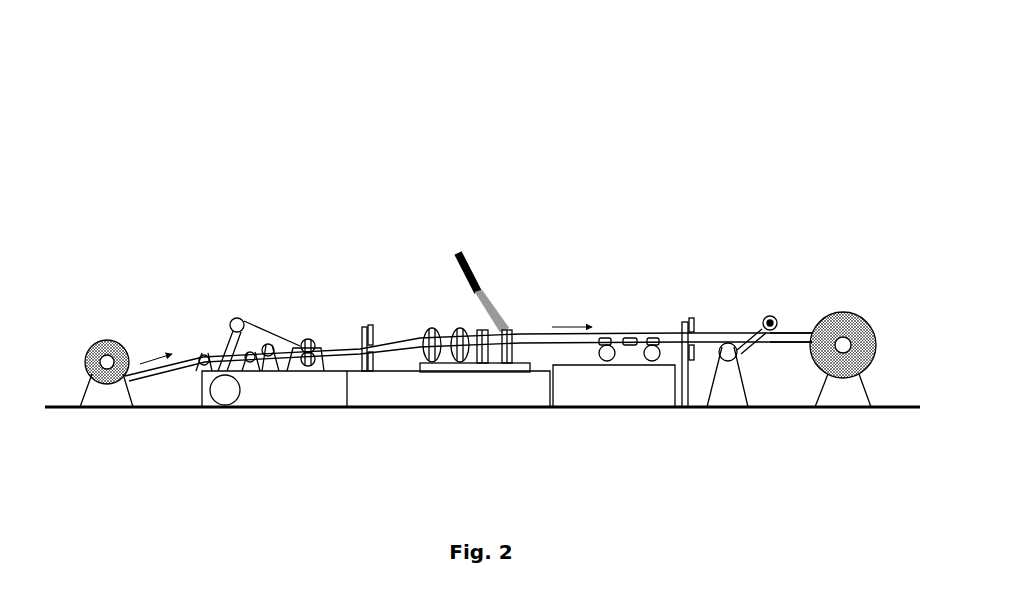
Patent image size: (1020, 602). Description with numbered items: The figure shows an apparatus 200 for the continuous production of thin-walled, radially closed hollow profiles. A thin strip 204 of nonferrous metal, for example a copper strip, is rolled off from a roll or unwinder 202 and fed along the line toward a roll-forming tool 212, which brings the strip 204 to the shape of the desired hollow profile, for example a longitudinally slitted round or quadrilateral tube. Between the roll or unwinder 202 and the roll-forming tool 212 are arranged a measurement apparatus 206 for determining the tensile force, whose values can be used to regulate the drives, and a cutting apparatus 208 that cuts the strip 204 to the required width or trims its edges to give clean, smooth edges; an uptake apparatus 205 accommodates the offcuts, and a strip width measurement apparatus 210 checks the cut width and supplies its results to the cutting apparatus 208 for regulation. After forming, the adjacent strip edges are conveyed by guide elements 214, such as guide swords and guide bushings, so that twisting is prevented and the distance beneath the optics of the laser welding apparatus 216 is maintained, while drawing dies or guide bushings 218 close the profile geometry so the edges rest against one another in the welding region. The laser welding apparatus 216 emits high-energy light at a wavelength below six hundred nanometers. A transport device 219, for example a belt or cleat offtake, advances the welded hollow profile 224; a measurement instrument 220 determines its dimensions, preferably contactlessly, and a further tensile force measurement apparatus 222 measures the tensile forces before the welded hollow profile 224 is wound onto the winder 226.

The apparatus 200 is at (190, 118).
The roll or unwinder 202 is at (108, 331).
The strip 204 is at (186, 345).
The uptake apparatus 205 is at (224, 410).
The measurement apparatus 206 is at (260, 344).
The cutting apparatus 208 is at (307, 336).
The strip width measurement apparatus 210 is at (368, 317).
The roll-forming tool 212 is at (434, 318).
The guide elements 214 is at (475, 323).
The laser welding apparatus 216 is at (473, 256).
The drawing dies or guide bushings 218 is at (512, 319).
The transport device 219 is at (626, 376).
The measurement instrument 220 is at (689, 314).
The further tensile force measurement apparatus 222 is at (762, 315).
The welded hollow profile 224 is at (805, 325).
The winder 226 is at (843, 373).